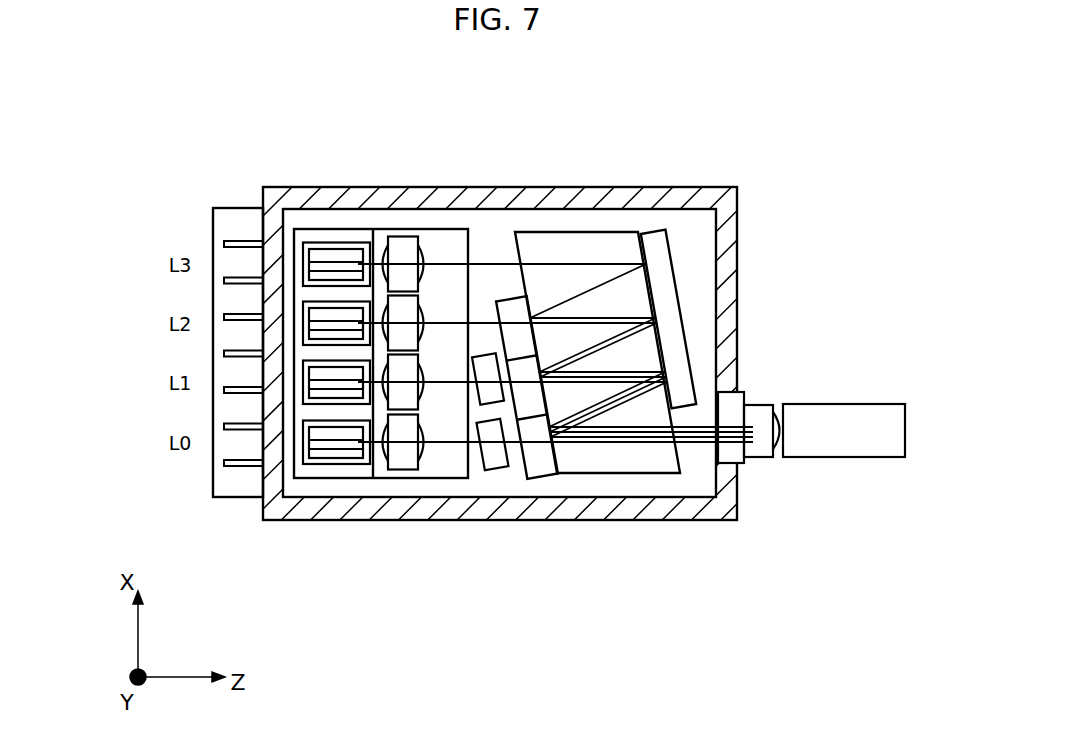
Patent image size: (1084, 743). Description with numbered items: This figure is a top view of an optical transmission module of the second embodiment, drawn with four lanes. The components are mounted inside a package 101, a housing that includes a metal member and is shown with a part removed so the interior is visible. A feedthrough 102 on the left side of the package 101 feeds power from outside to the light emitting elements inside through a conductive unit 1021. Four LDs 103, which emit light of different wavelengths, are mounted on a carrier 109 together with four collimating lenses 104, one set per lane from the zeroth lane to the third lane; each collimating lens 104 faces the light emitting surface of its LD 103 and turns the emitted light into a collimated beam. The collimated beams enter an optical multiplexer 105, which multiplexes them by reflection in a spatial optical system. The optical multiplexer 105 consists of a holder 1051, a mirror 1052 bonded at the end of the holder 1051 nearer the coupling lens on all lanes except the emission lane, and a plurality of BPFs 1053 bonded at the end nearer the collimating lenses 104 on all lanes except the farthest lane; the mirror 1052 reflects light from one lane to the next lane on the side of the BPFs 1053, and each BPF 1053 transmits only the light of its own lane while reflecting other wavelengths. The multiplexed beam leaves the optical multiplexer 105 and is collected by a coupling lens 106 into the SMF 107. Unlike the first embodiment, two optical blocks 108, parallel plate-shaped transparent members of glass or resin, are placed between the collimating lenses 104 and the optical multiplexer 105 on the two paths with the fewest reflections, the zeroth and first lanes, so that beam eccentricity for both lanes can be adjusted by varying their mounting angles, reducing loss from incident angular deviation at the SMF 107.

The package 101 is at (660, 521).
The feedthrough 102 is at (196, 365).
The conductive unit 1021 is at (235, 468).
The light emitting element (LD) 103 is at (342, 249).
The collimating lens 104 is at (403, 245).
The optical multiplexer 105 is at (468, 138).
The holder 1051 is at (576, 240).
The mirror 1052 is at (654, 236).
The BPF 1053 is at (512, 303).
The coupling lens 106 is at (760, 458).
The SMF 107 is at (858, 410).
The optical block 108 is at (490, 470).
The carrier 109 is at (305, 230).